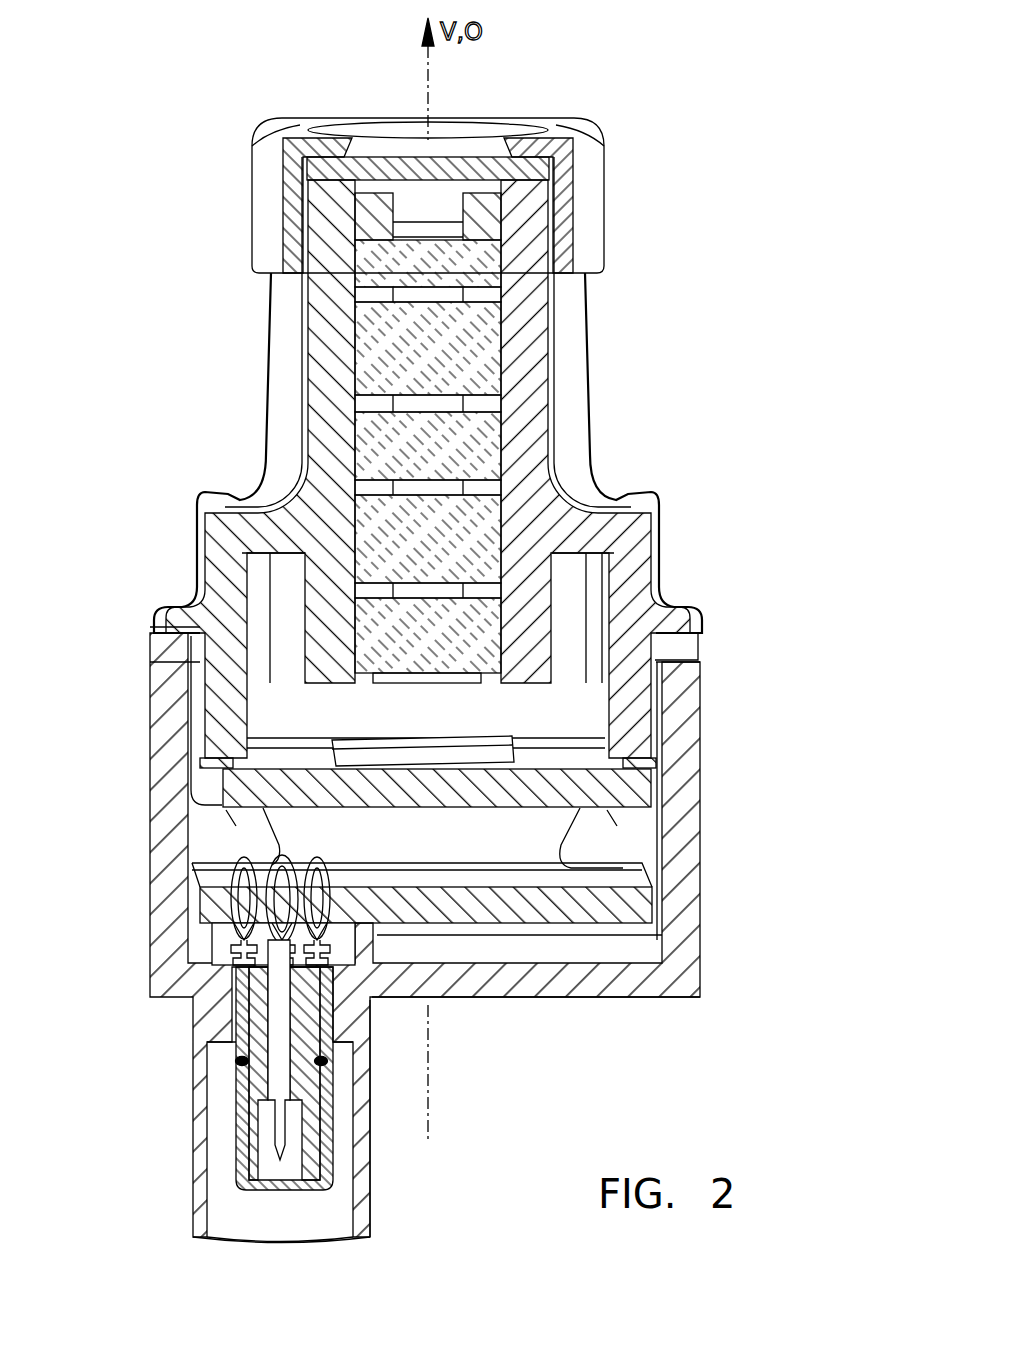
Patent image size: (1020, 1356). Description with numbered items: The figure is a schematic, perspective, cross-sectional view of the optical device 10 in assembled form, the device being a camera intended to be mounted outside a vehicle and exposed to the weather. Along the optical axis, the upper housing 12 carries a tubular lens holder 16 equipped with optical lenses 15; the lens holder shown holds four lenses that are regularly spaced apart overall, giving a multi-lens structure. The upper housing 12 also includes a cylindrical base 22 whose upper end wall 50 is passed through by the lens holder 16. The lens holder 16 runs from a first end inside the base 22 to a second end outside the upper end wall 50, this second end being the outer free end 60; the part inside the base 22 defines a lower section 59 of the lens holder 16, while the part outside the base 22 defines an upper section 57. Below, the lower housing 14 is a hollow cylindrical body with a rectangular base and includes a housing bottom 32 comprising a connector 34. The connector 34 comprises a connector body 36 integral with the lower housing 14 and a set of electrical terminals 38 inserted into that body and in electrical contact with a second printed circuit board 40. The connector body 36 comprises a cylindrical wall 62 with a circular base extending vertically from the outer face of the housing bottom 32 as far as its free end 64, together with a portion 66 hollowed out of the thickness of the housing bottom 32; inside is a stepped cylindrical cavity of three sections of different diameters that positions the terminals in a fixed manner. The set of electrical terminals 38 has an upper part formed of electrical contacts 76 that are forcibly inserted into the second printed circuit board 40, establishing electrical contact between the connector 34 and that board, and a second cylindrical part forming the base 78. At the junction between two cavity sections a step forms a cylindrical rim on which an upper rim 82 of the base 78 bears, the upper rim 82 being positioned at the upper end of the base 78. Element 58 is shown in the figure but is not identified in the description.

The optical device 10 is at (672, 198).
The upper housing 12 is at (652, 436).
The lower housing 14 is at (722, 882).
The optical lenses 15 is at (415, 296).
The tubular lens holder 16 is at (248, 357).
The cylindrical base 22 is at (672, 552).
The housing bottom 32 is at (572, 1008).
The connector 34 is at (418, 1180).
The connector body 36 is at (378, 1125).
The set of electrical terminals 38 is at (228, 1110).
The second printed circuit board 40 is at (603, 907).
The upper end wall 50 is at (654, 490).
The upper section 57 is at (578, 352).
The chamber 58 is at (550, 692).
The lower section 59 is at (565, 613).
The outer free end 60 is at (320, 168).
The cylindrical wall 62 is at (200, 1108).
The free end 64 is at (198, 1250).
The portion 66 is at (222, 1018).
The electrical contacts 76 is at (248, 905).
The base 78 is at (225, 1068).
The upper rim 82 is at (228, 970).